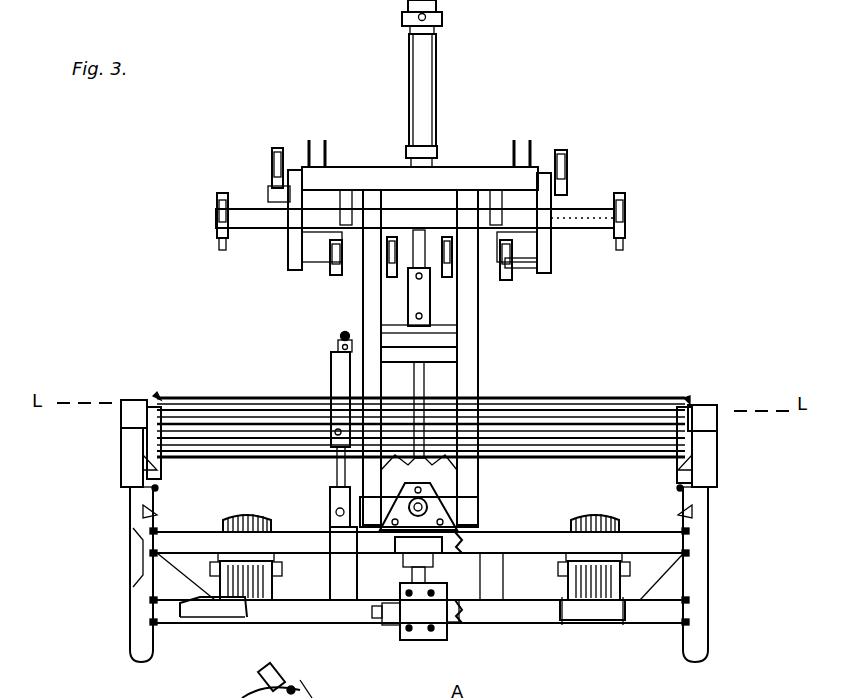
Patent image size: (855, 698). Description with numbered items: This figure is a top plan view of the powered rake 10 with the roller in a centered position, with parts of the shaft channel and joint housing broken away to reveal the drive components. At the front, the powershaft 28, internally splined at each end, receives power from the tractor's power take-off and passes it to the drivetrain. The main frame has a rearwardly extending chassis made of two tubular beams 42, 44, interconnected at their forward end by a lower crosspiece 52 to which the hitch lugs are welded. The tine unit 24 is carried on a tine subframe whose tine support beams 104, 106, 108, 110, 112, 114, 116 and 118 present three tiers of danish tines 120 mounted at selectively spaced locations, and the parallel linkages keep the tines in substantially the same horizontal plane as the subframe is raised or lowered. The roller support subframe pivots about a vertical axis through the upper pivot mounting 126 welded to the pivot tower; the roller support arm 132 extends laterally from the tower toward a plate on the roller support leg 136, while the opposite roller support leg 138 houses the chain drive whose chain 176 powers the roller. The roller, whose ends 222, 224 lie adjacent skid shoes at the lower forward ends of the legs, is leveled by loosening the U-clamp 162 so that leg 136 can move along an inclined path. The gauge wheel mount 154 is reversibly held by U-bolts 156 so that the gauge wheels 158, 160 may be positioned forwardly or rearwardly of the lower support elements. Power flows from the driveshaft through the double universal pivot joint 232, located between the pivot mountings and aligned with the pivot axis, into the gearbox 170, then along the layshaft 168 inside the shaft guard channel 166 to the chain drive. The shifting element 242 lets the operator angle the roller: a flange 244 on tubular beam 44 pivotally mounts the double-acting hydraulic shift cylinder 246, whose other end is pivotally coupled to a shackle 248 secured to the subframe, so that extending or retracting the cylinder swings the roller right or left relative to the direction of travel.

The powered rake 10 is at (624, 96).
The tine unit 24 is at (638, 208).
The powershaft 28 is at (433, 78).
The tubular beam 42 is at (470, 375).
The tubular beam 44 is at (343, 333).
The lower crosspiece 52 is at (513, 162).
The tine support beam 104 is at (567, 178).
The tine support beam 106 is at (580, 220).
The tine support beam 108 is at (530, 232).
The tine support beam 110 is at (523, 270).
The tine support beam 112 is at (266, 178).
The tine support beam 114 is at (246, 210).
The tine support beam 116 is at (313, 231).
The tine support beam 118 is at (310, 263).
The danish tines 120 is at (280, 148).
The upper pivot mounting 126 is at (452, 530).
The roller support arm 132 is at (322, 690).
The roller support leg 136 is at (705, 510).
The roller support leg 138 is at (135, 492).
The gauge wheel mount 154 is at (270, 576).
The U-bolts 156 is at (277, 620).
The gauge wheel 158 is at (590, 516).
The gauge wheel 160 is at (245, 516).
The U-clamp 162 is at (258, 680).
The shaft guard channel 166 is at (288, 618).
The layshaft 168 is at (197, 620).
The gearbox 170 is at (425, 633).
The chain 176 is at (133, 555).
The roller end 222 is at (686, 398).
The roller end 224 is at (157, 394).
The double universal pivot joint 232 is at (432, 500).
The shifting element 242 is at (300, 392).
The flange 244 is at (337, 354).
The hydraulic shift cylinder 246 is at (330, 385).
The shackle 248 is at (330, 516).